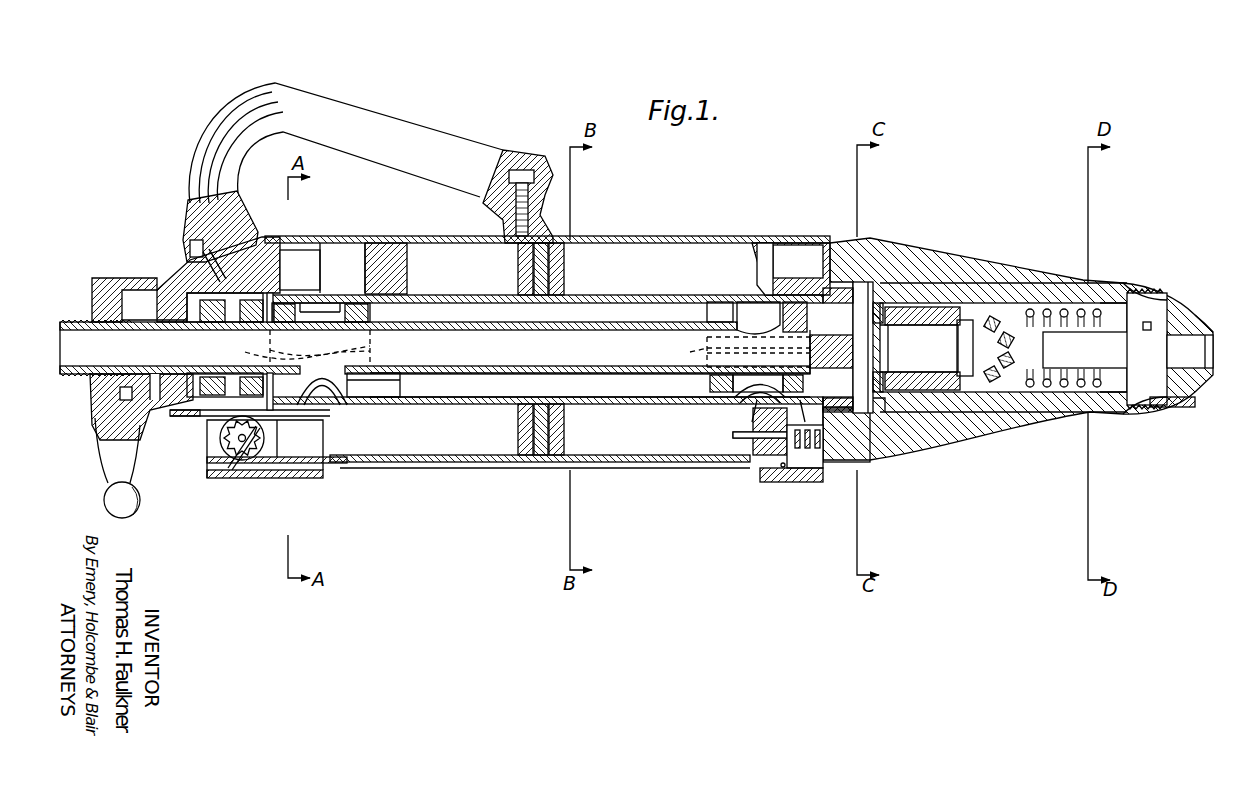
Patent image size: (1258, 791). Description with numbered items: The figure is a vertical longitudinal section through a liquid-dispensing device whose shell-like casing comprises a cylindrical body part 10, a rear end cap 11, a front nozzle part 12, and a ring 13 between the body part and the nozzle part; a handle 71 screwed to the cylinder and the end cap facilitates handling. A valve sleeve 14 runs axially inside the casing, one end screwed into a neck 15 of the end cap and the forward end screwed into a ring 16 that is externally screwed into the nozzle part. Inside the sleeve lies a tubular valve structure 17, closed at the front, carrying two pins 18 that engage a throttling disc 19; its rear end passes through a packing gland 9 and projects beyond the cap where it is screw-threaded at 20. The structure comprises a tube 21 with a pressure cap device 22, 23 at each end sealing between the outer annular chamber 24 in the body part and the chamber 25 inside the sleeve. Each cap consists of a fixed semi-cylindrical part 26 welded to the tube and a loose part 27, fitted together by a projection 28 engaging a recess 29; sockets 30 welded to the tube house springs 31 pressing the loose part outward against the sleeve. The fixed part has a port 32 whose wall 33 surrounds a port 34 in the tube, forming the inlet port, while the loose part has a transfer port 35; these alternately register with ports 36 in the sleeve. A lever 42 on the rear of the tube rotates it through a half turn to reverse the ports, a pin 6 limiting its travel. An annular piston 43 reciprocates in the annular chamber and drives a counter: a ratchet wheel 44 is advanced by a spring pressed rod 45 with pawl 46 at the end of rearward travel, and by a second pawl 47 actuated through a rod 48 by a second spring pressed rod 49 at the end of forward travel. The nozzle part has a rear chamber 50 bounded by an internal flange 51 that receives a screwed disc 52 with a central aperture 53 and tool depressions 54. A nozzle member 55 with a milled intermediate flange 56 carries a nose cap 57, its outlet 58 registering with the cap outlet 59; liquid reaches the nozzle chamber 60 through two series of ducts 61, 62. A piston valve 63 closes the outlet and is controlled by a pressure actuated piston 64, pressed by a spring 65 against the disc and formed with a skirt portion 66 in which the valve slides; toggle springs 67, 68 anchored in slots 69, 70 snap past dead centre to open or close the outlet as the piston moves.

The pin 6 is at (120, 393).
The packing gland 9 is at (243, 406).
The cylindrical body part 10 is at (650, 238).
The rear end cap 11 is at (173, 280).
The front nozzle part 12 is at (930, 250).
The ring 13 is at (800, 242).
The valve sleeve 14 is at (678, 294).
The neck 15 is at (292, 288).
The ring 16 is at (863, 288).
The tubular valve structure 17 is at (435, 348).
The pins 18 is at (865, 455).
The throttling disc 19 is at (897, 420).
The screw thread 20 is at (92, 307).
The tube 21 is at (477, 375).
The pressure cap device 22 is at (360, 383).
The pressure cap device 23 is at (788, 352).
The outer annular chamber 24 is at (632, 452).
The chamber 25 is at (637, 392).
The fixed semi-cylindrical part 26 is at (765, 340).
The loose semi-cylindrical part 27 is at (300, 318).
The projection 28 is at (598, 349).
The recess 29 is at (446, 349).
The socket 30 is at (313, 305).
The spring 31 is at (317, 307).
The port 32 is at (762, 297).
The wall 33 is at (326, 400).
The port 34 is at (330, 378).
The transfer port 35 is at (320, 300).
The port 36 is at (335, 415).
The lever 42 is at (118, 456).
The annular piston 43 is at (548, 446).
The ratchet wheel 44 is at (217, 470).
The spring pressed rod 45 is at (292, 438).
The pawl 46 is at (232, 446).
The second pawl 47 is at (239, 470).
The rod 48 is at (418, 469).
The second spring pressed rod 49 is at (188, 418).
The rear chamber 50 is at (880, 273).
The internal flange 51 is at (893, 280).
The screwed disc 52 is at (908, 412).
The central through aperture 53 is at (925, 407).
The depressions 54 is at (927, 313).
The nozzle member 55 is at (1140, 290).
The intermediate flange 56 is at (1152, 303).
The nose cap 57 is at (1195, 314).
The outlet 58 is at (1210, 345).
The outlet 59 is at (1210, 356).
The nozzle chamber 60 is at (1175, 296).
The ducts 61 is at (1062, 297).
The ducts 62 is at (918, 398).
The piston valve 63 is at (1165, 400).
The pressure actuated piston 64 is at (945, 322).
The spring 65 is at (1095, 397).
The skirt portion 66 is at (973, 310).
The spring 67 is at (1105, 350).
The spring 68 is at (1000, 400).
The slot 69 is at (1017, 313).
The slot 70 is at (985, 400).
The handle 71 is at (433, 140).